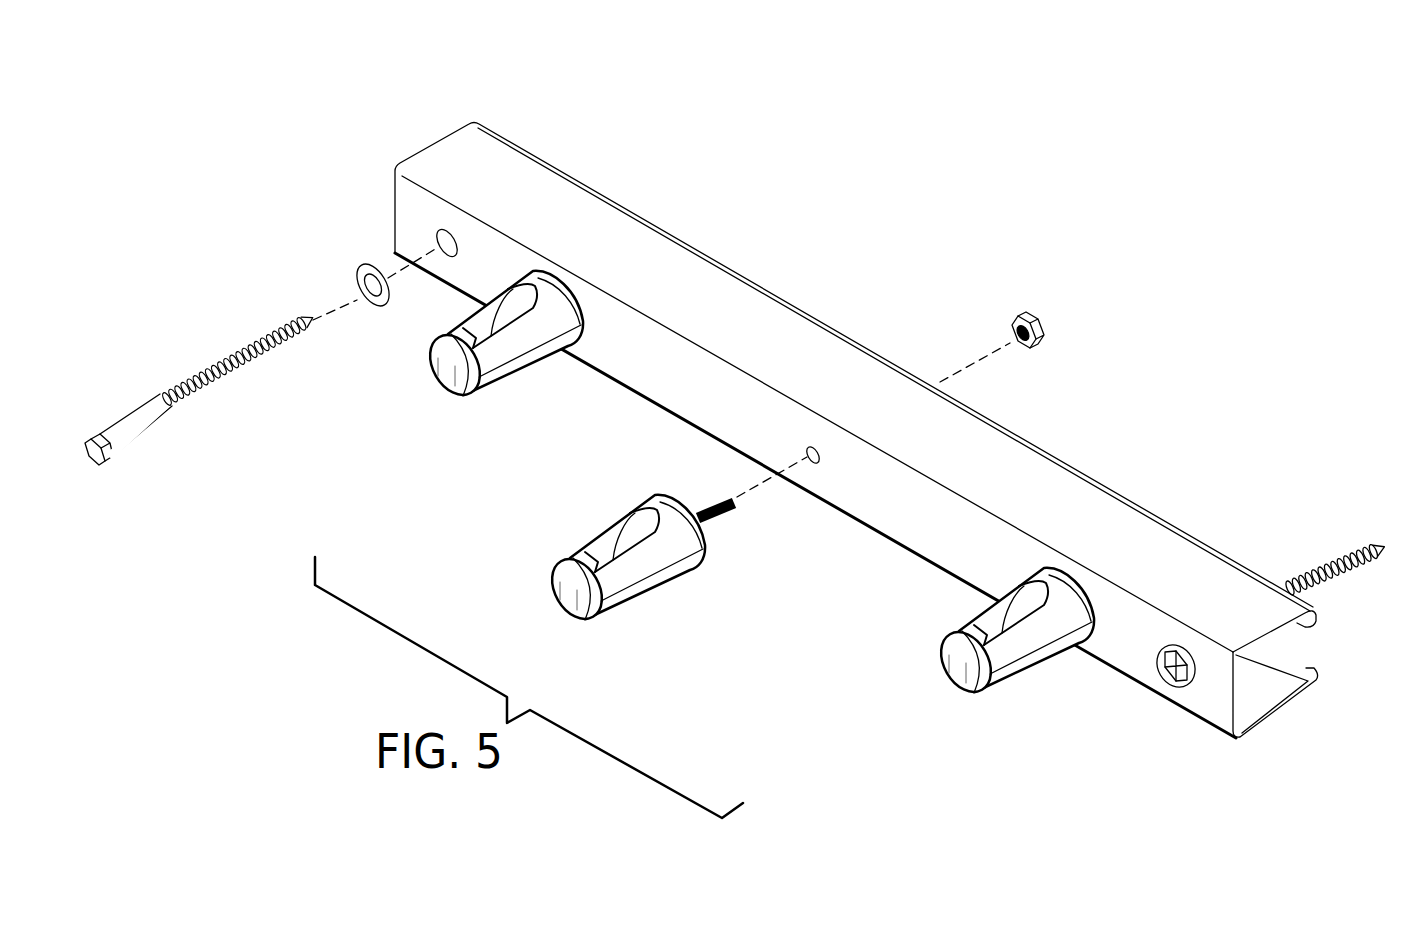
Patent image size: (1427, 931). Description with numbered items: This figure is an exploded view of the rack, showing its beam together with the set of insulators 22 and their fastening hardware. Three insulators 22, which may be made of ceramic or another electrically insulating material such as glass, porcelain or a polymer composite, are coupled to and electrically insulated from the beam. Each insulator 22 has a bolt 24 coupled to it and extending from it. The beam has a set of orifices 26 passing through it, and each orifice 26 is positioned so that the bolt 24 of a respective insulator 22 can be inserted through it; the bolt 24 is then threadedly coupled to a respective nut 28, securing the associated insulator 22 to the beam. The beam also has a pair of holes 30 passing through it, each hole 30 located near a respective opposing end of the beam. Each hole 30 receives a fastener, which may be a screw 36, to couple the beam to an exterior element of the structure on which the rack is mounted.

The insulator 22 is at (689, 600).
The bolt 24 is at (724, 534).
The orifice 26 is at (817, 440).
The nut 28 is at (1038, 304).
The hole 30 is at (466, 225).
The screw 36 is at (1356, 534).